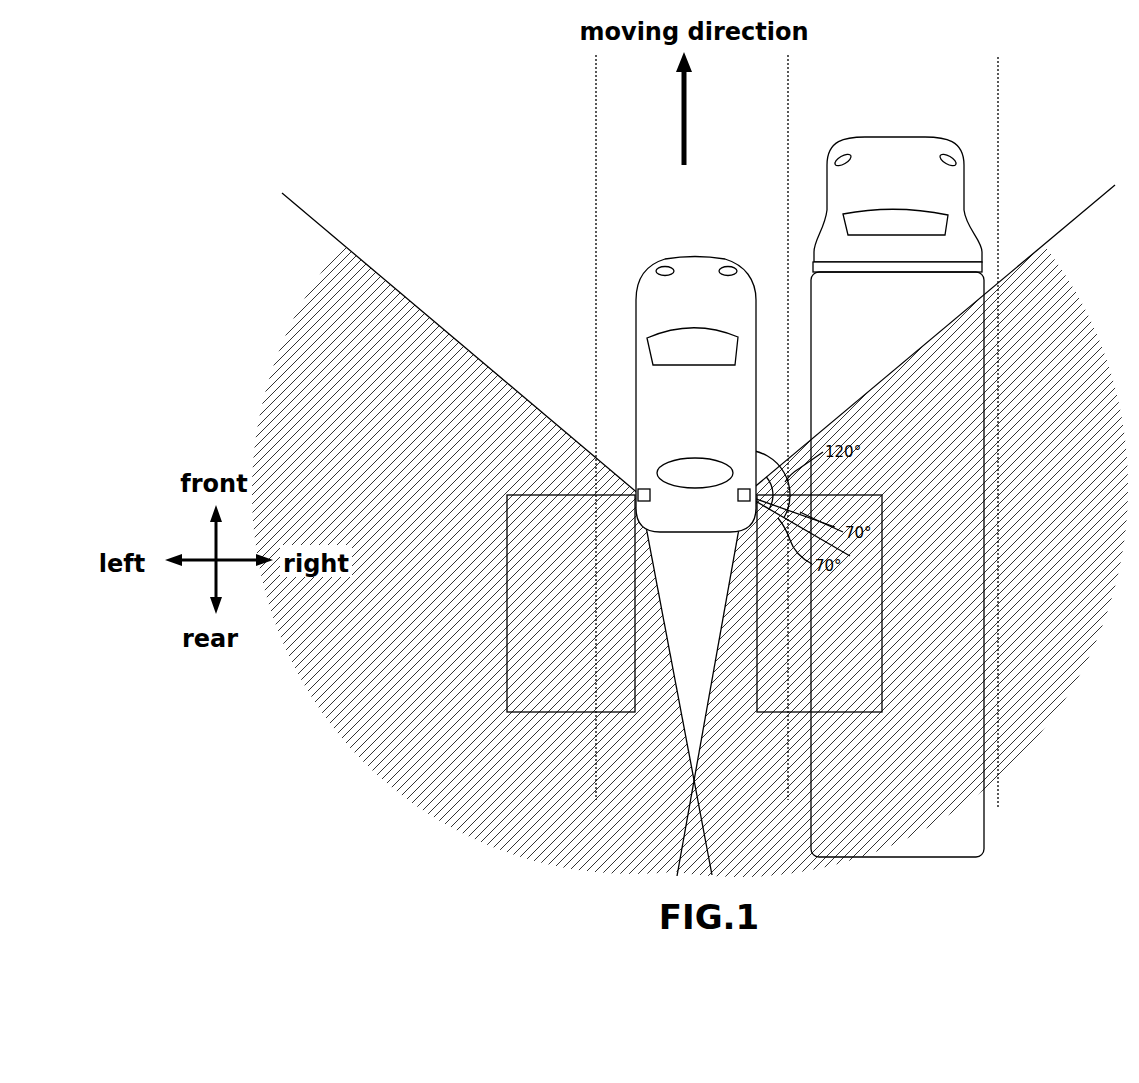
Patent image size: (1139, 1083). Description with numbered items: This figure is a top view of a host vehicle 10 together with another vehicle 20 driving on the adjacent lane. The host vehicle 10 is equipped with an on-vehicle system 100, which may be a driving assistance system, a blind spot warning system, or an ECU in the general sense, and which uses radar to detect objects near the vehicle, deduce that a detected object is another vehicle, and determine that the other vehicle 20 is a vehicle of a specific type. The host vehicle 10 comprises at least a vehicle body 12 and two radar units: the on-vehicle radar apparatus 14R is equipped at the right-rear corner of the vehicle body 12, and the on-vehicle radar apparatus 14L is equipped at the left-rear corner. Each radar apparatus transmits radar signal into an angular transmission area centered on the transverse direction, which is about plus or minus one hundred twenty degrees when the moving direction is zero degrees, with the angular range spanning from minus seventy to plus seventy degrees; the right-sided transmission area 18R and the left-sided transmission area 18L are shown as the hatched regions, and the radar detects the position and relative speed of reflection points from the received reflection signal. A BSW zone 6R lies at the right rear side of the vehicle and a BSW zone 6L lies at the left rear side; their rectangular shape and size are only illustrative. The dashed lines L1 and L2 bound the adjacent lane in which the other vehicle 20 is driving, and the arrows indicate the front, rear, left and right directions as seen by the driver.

The on-vehicle system 100 is at (680, 259).
The host vehicle 10 is at (861, 210).
The vehicle body 12 is at (897, 204).
The other vehicle 20 is at (984, 410).
The on-vehicle radar apparatus 14L is at (648, 503).
The on-vehicle radar apparatus 14R is at (737, 505).
The BSW zone 6L is at (507, 495).
The BSW zone 6R is at (882, 495).
The transmission area 18L is at (386, 283).
The transmission area 18R is at (1012, 276).
The line L1 is at (785, 133).
The line L2 is at (993, 131).